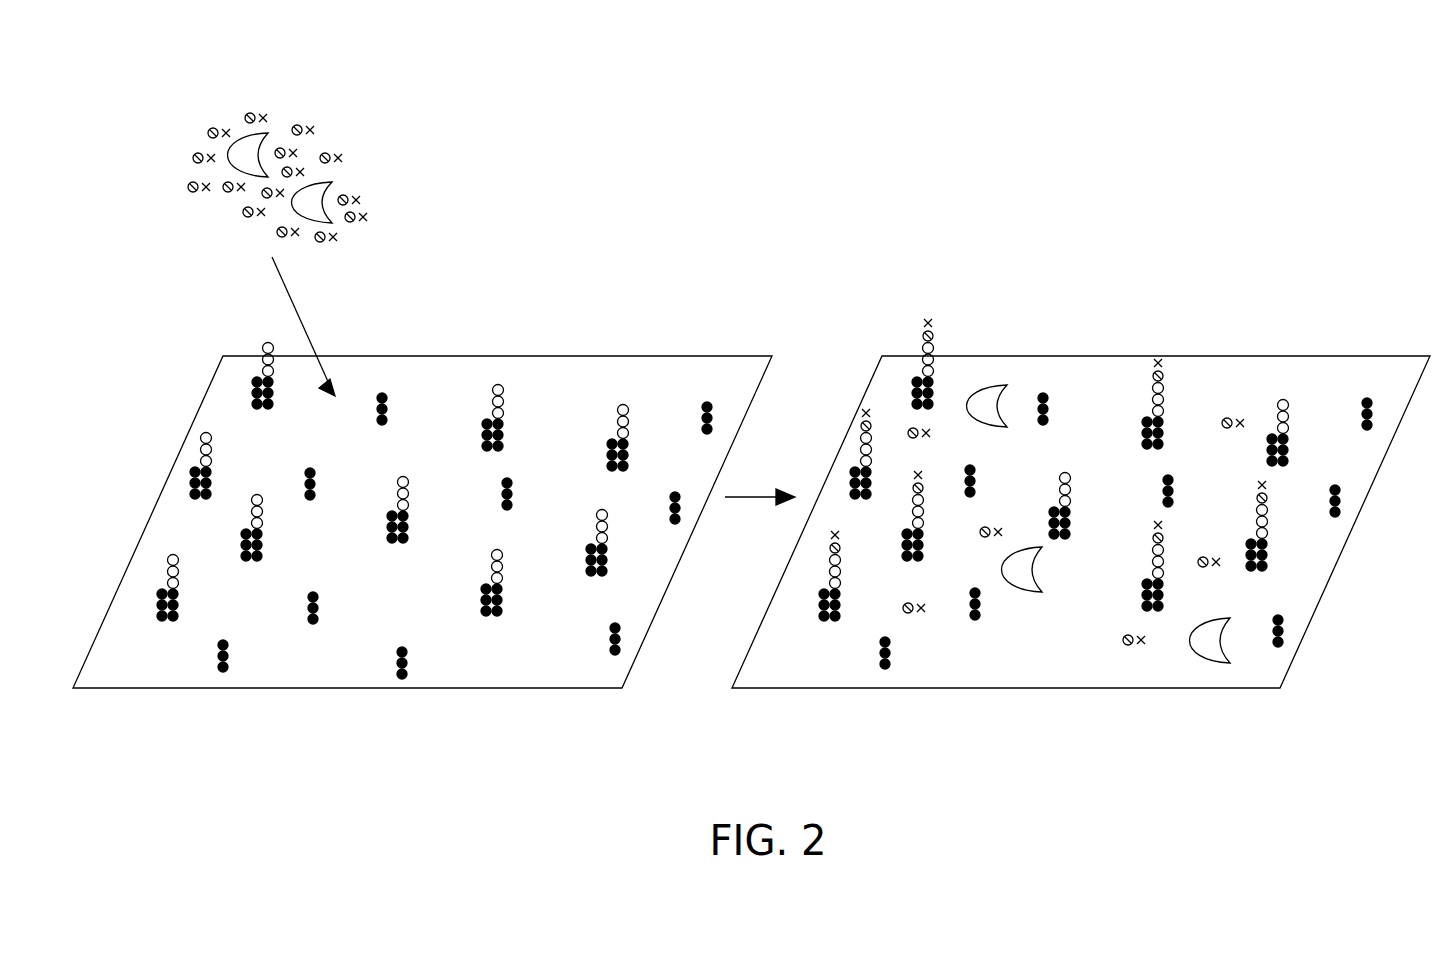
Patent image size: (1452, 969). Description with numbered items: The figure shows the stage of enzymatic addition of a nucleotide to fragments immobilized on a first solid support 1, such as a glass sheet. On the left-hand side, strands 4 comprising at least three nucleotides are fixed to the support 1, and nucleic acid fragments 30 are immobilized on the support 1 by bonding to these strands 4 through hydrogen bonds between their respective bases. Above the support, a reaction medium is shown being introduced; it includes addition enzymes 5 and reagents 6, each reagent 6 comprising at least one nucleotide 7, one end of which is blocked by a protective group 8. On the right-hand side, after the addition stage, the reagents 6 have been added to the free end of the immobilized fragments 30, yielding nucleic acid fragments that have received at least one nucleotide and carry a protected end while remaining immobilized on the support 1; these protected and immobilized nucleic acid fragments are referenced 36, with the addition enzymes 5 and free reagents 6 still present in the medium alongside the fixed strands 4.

The first solid support 1 is at (612, 368).
The strands 4 is at (622, 642).
The addition enzymes 5 is at (233, 158).
The reagents 6 is at (255, 108).
The nucleotide 7 is at (333, 150).
The protective group 8 is at (341, 155).
The nucleic acid fragments 30 is at (497, 378).
The protected and immobilized nucleic acid fragments 36 is at (926, 315).